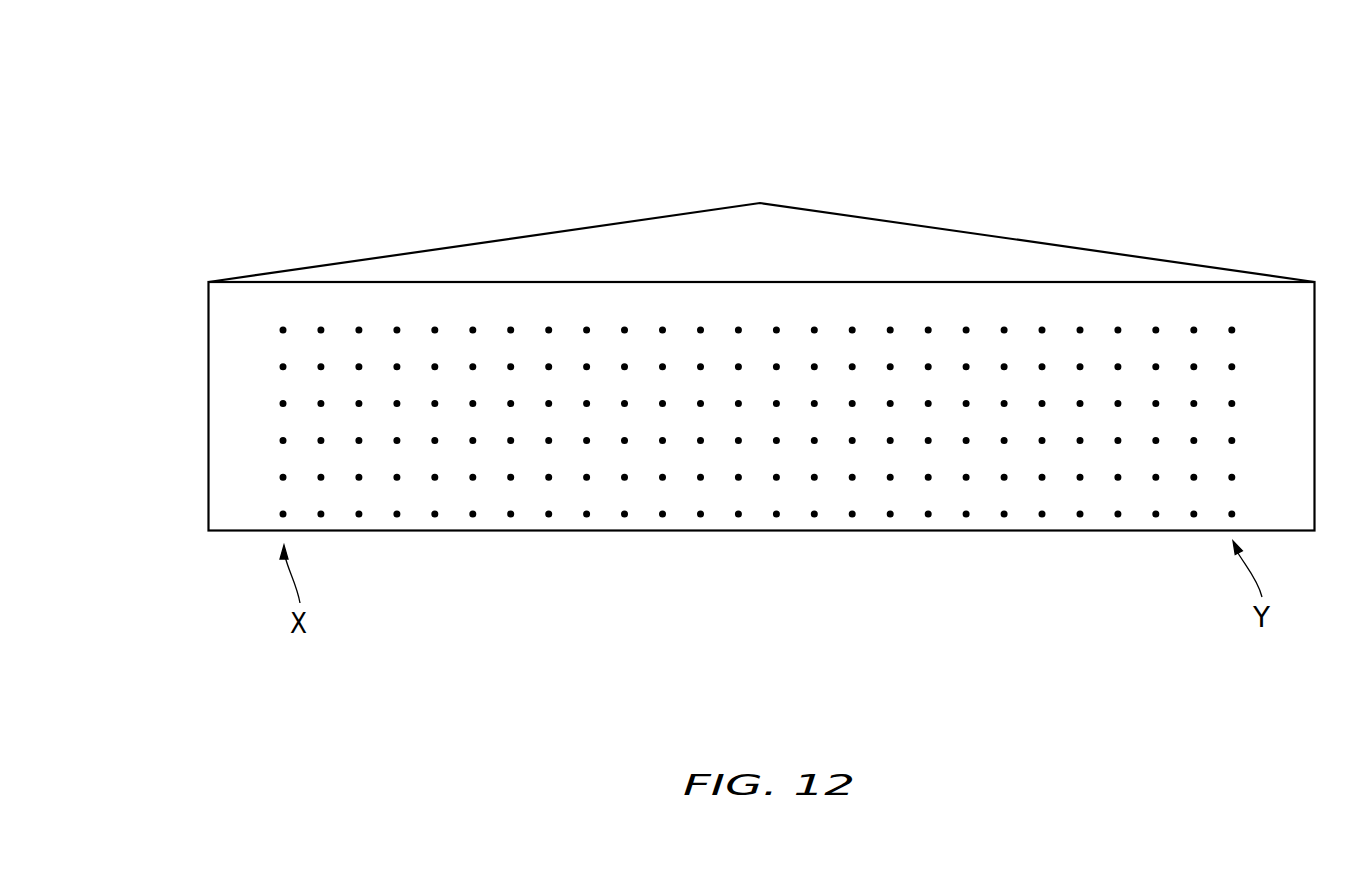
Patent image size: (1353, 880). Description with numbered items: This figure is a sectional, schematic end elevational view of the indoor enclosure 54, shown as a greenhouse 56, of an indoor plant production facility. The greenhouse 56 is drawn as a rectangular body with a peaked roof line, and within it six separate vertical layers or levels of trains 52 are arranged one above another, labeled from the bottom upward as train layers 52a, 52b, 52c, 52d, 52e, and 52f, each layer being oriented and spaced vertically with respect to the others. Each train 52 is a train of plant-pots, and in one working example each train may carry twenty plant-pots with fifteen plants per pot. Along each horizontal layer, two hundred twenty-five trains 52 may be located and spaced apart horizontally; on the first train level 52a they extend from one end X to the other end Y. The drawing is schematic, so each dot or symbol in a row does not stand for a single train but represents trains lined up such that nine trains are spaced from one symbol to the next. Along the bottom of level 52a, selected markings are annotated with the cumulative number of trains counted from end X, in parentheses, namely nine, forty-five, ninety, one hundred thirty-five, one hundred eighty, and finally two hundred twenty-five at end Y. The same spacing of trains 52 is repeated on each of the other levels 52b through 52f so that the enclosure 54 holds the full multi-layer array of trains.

The train 52 is at (468, 300).
The first train layer 52a is at (279, 514).
The train layer 52b is at (279, 477).
The train layer 52c is at (279, 440).
The train layer 52d is at (279, 404).
The train layer 52e is at (279, 367).
The train layer 52f is at (279, 330).
The indoor enclosure 54 is at (721, 312).
The greenhouse 56 is at (1122, 254).